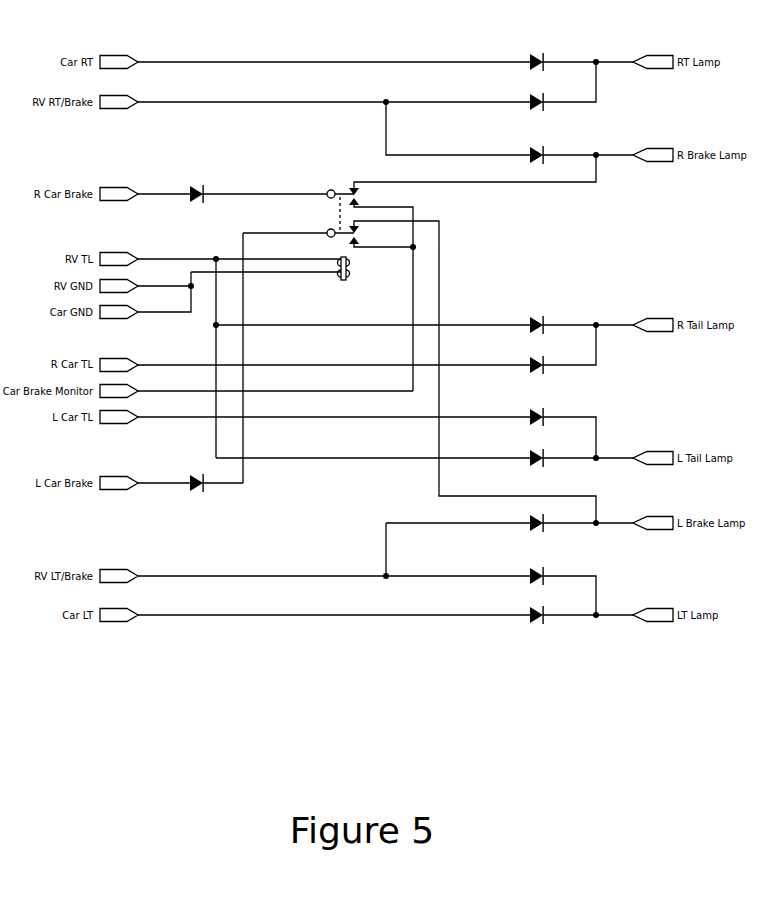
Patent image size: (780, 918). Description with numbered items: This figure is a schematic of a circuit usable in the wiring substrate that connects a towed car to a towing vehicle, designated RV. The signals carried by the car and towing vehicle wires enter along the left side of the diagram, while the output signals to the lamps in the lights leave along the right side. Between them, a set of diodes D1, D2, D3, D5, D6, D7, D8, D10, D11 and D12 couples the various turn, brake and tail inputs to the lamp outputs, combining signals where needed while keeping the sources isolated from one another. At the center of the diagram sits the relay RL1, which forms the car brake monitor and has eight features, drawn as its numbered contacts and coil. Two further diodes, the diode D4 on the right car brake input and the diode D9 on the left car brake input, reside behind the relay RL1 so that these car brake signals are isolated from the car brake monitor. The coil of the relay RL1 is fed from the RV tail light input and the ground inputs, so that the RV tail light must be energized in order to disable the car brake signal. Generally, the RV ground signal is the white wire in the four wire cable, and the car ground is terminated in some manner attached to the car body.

The diode D1 is at (537, 55).
The diode D2 is at (537, 95).
The diode D3 is at (537, 148).
The diode D4 is at (197, 187).
The diode D5 is at (537, 318).
The diode D6 is at (537, 358).
The diode D7 is at (537, 410).
The diode D8 is at (537, 451).
The diode D9 is at (197, 476).
The diode D10 is at (537, 516).
The diode D11 is at (537, 569).
The diode D12 is at (537, 608).
The relay RL1 is at (334, 235).